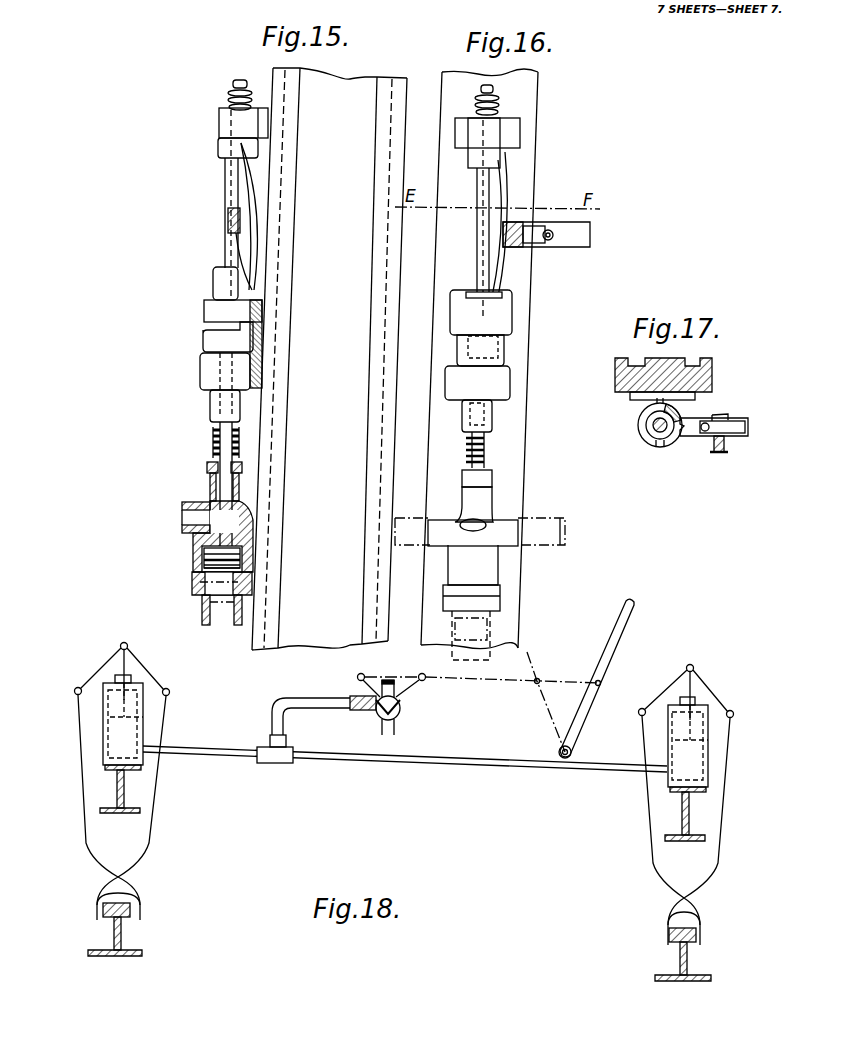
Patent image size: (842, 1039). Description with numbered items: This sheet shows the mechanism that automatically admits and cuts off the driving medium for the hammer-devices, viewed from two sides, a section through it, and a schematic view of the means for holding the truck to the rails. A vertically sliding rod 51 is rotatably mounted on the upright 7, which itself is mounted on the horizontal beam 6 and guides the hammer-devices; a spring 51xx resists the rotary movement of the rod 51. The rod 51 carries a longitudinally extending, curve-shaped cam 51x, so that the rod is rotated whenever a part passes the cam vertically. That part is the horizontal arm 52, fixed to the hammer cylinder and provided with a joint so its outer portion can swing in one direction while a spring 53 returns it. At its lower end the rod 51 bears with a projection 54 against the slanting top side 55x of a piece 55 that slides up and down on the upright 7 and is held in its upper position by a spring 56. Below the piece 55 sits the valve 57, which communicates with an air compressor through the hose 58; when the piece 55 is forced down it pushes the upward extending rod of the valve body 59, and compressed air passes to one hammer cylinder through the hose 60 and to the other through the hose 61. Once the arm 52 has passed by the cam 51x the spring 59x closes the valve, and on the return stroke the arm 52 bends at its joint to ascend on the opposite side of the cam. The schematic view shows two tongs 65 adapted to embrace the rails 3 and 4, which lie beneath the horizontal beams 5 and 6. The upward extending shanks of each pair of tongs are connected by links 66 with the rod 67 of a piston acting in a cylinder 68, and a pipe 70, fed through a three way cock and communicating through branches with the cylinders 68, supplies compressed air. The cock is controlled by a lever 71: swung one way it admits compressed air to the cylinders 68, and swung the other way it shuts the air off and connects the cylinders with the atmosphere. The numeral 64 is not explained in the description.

In FIG. 18, the rail 3 is at (686, 960).
In FIG. 18, the rail 4 is at (118, 936).
In FIG. 18, the horizontal beam 5 is at (683, 812).
In FIG. 18, the horizontal beam 6 is at (124, 792).
In FIG. 15, the upright 7 is at (284, 370).
In FIG. 16, the upright 7 is at (518, 424).
In FIG. 17, the upright 7 is at (712, 380).
In FIG. 15, the vertically sliding rod 51 is at (228, 181).
In FIG. 16, the vertically sliding rod 51 is at (485, 190).
In FIG. 17, the vertically sliding rod 51 is at (656, 428).
In FIG. 15, the cam 51x is at (250, 201).
In FIG. 16, the cam 51x is at (510, 195).
In FIG. 15, the spring 51xx is at (227, 100).
In FIG. 16, the spring 51xx is at (500, 107).
In FIG. 15, the horizontal arm 52 is at (228, 228).
In FIG. 16, the horizontal arm 52 is at (550, 244).
In FIG. 17, the horizontal arm 52 is at (733, 427).
In FIG. 17, the spring 53 is at (726, 445).
In FIG. 15, the projection 54 is at (240, 368).
In FIG. 16, the projection 54 is at (470, 362).
In FIG. 15, the piece 55 is at (225, 386).
In FIG. 16, the piece 55 is at (480, 395).
In FIG. 15, the slanting top side 55x is at (237, 362).
In FIG. 15, the spring 56 is at (213, 445).
In FIG. 16, the spring 56 is at (468, 450).
In FIG. 15, the valve 57 is at (207, 534).
In FIG. 16, the valve 57 is at (471, 540).
In FIG. 16, the hose 58 is at (488, 640).
In FIG. 15, the valve body 59 is at (255, 545).
In FIG. 15, the spring 59x is at (246, 561).
In FIG. 16, the hose 60 is at (410, 522).
In FIG. 16, the hose 61 is at (545, 530).
In FIG. 18, the cock / valve 64 is at (402, 712).
In FIG. 18, the tongs 65 is at (148, 843).
In FIG. 18, the links 66 is at (108, 664).
In FIG. 18, the piston rod 67 is at (143, 715).
In FIG. 18, the cylinder 68 is at (733, 768).
In FIG. 18, the pipe 70 is at (310, 703).
In FIG. 18, the lever 71 is at (588, 714).